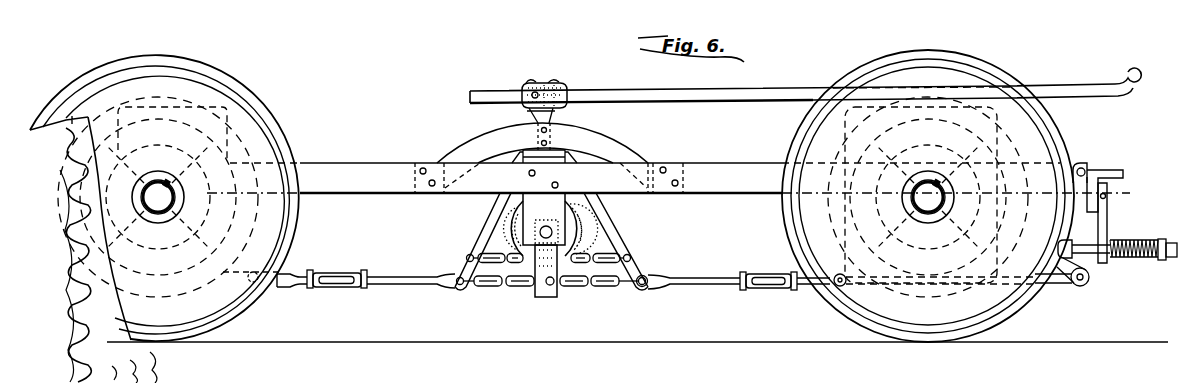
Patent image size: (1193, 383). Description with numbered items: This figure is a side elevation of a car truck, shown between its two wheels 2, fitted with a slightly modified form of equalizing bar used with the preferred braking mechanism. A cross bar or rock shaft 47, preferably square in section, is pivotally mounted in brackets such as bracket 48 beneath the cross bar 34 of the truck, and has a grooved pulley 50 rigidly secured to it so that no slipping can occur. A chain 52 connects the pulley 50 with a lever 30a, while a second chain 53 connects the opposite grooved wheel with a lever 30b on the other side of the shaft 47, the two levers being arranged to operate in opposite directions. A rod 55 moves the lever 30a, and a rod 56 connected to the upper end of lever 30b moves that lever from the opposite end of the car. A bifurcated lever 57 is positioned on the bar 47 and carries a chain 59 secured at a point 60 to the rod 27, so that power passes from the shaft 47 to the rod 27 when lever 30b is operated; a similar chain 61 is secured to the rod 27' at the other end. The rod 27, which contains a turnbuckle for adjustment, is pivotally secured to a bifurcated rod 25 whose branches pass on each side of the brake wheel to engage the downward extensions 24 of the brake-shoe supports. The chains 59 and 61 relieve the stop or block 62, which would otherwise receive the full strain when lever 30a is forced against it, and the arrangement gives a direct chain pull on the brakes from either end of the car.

The wheel 2 is at (283, 155).
The downward extensions of the supports 24 is at (1085, 264).
The bifurcated rod 25 is at (1069, 286).
The rod 27 is at (860, 294).
The rod 27' is at (366, 296).
The lever 30a is at (603, 222).
The lever 30b is at (487, 231).
The cross bar 34 is at (514, 116).
The cross bar (rock shaft) 47 is at (553, 233).
The bracket 48 is at (555, 205).
The pulley or grooved wheel 50 is at (512, 225).
The chain 52 is at (604, 256).
The chain 53 is at (486, 252).
The rod 55 is at (788, 90).
The rod 56 is at (496, 91).
The bifurcated lever 57 is at (551, 292).
The chain 59 is at (605, 287).
The connection point 60 is at (636, 285).
The chain 61 is at (520, 285).
The stop or block 62 is at (562, 126).